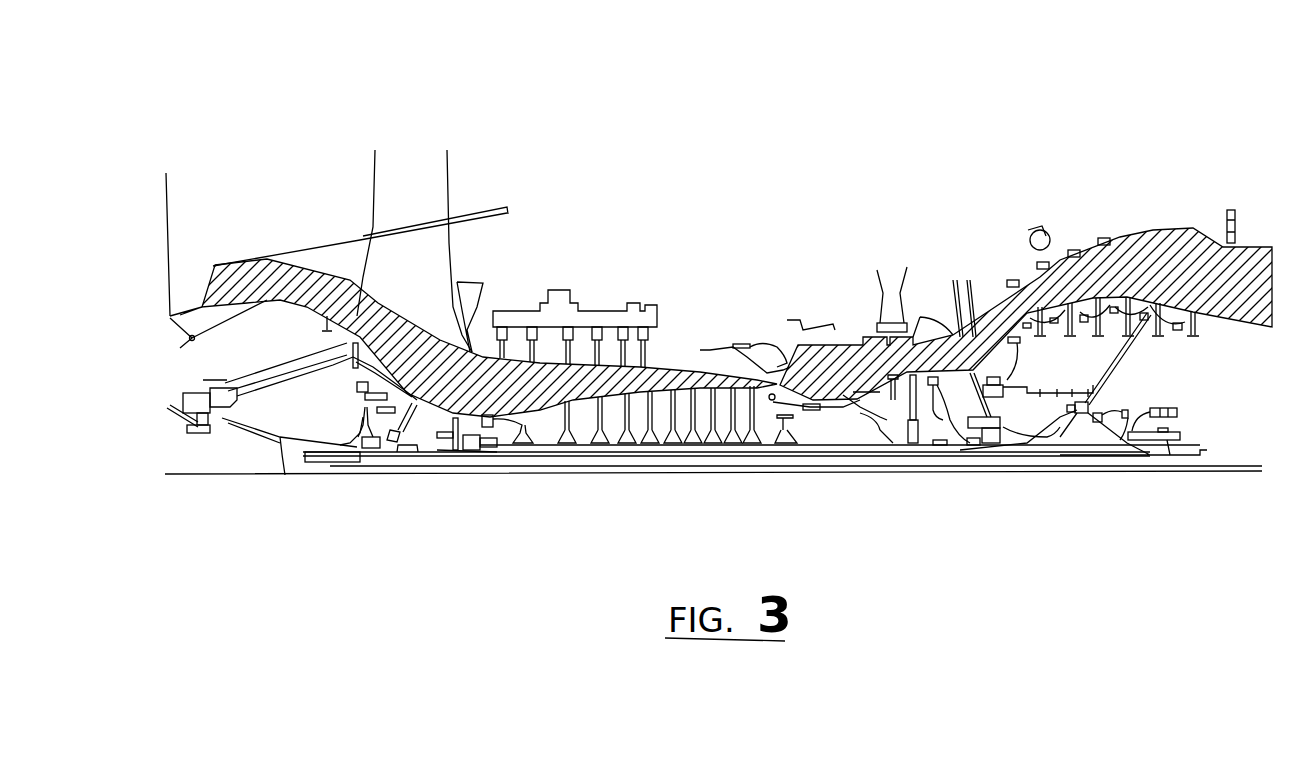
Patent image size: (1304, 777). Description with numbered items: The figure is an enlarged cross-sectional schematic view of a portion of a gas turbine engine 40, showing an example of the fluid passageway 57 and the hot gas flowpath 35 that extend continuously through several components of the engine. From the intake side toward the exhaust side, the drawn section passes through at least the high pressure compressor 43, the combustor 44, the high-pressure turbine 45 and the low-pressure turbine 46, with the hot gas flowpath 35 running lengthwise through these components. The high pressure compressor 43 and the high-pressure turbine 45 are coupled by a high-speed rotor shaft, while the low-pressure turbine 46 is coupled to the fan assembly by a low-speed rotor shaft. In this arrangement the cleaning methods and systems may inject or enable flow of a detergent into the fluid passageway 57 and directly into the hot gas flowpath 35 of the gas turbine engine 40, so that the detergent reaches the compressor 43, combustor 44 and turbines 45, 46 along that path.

The gas turbine engine 40 is at (1056, 115).
The hot gas flowpath 35 is at (1145, 265).
The fluid passageway 57 is at (480, 380).
The high pressure compressor 43 is at (640, 253).
The combustor 44 is at (887, 278).
The high-pressure turbine 45 is at (1127, 160).
The low-pressure turbine 46 is at (1022, 200).